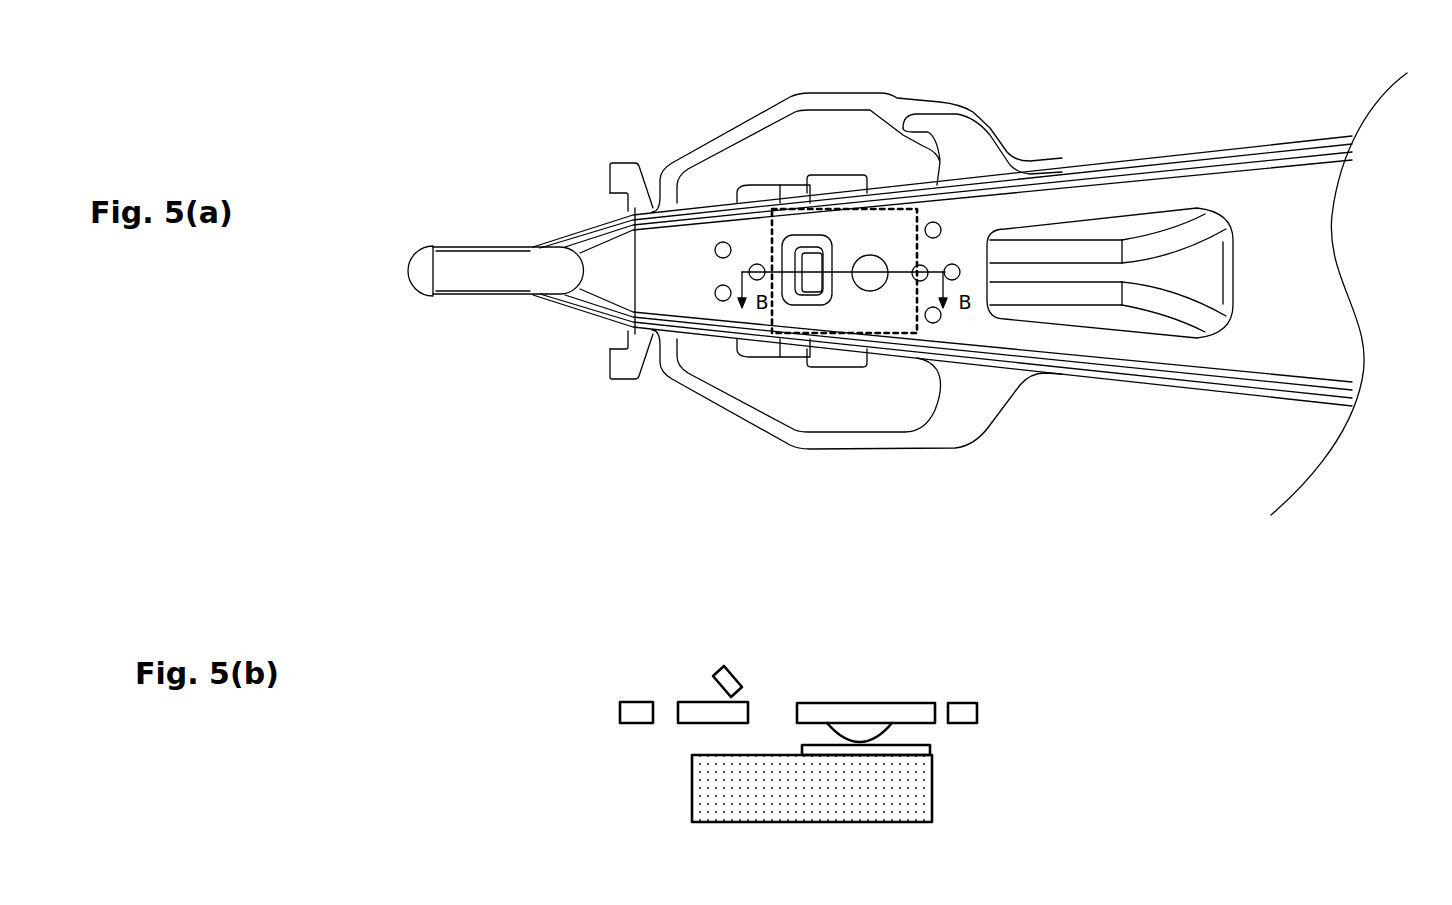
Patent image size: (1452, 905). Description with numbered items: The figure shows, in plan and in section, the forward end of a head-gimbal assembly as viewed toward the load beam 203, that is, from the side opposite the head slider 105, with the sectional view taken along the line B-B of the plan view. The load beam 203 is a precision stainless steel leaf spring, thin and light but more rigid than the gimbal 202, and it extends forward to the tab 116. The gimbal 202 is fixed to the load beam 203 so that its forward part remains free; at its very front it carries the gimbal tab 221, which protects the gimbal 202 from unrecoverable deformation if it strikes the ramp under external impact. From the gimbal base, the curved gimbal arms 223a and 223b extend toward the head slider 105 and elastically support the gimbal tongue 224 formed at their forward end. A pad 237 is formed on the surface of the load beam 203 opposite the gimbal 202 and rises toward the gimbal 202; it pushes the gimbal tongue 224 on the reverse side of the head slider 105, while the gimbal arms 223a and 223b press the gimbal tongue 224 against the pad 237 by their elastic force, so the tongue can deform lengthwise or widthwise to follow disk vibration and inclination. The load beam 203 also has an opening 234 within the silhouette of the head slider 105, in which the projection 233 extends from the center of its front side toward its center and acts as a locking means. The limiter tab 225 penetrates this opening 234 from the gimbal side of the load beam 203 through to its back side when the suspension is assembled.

In FIG. 5A, the gimbal 202 is at (583, 231).
In FIG. 5A, the tab 116 is at (450, 296).
In FIG. 5A, the gimbal tab 221 is at (615, 379).
In FIG. 5A, the gimbal arm 223a is at (973, 432).
In FIG. 5A, the gimbal arm 223b is at (850, 93).
In FIG. 5A, the projection 233 is at (812, 254).
In FIG. 5B, the projection 233 is at (748, 703).
In FIG. 5A, the limiter tab 225 is at (802, 305).
In FIG. 5B, the limiter tab 225 is at (728, 670).
In FIG. 5A, the pad 237 is at (873, 254).
In FIG. 5B, the pad 237 is at (892, 731).
In FIG. 5A, the head slider 105 is at (867, 352).
In FIG. 5B, the head slider 105 is at (740, 822).
In FIG. 5B, the opening 234 is at (797, 713).
In FIG. 5B, the load beam 203 is at (900, 703).
In FIG. 5B, the gimbal tongue 224 is at (930, 750).